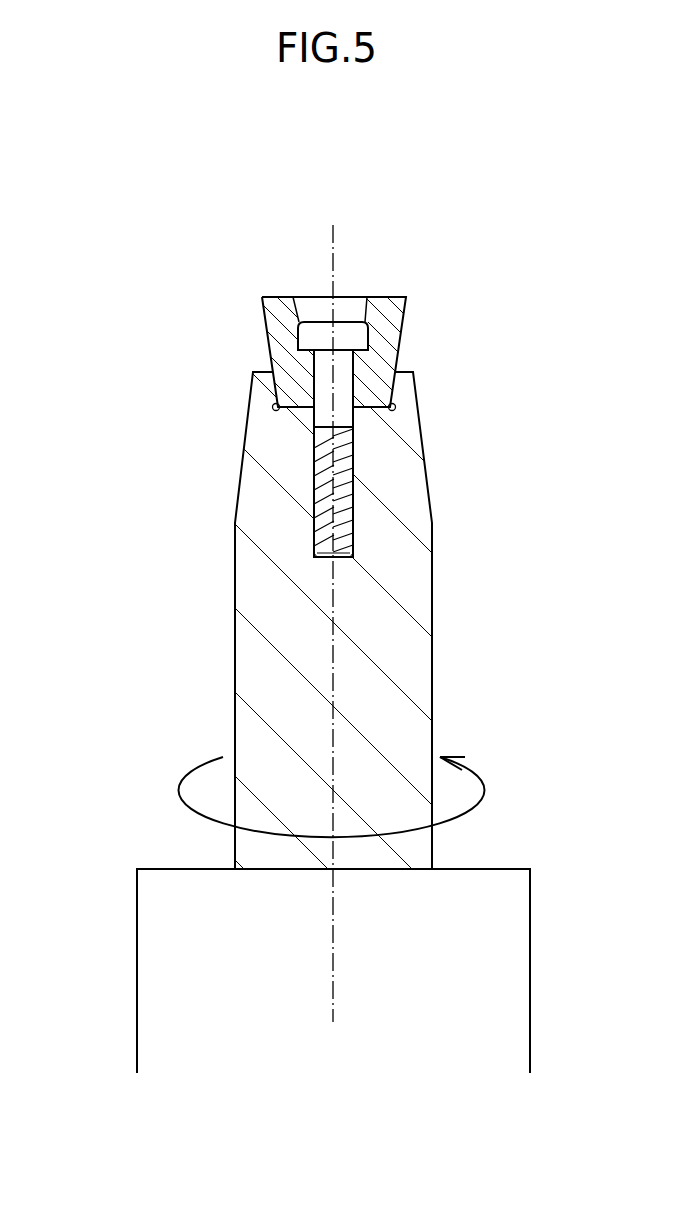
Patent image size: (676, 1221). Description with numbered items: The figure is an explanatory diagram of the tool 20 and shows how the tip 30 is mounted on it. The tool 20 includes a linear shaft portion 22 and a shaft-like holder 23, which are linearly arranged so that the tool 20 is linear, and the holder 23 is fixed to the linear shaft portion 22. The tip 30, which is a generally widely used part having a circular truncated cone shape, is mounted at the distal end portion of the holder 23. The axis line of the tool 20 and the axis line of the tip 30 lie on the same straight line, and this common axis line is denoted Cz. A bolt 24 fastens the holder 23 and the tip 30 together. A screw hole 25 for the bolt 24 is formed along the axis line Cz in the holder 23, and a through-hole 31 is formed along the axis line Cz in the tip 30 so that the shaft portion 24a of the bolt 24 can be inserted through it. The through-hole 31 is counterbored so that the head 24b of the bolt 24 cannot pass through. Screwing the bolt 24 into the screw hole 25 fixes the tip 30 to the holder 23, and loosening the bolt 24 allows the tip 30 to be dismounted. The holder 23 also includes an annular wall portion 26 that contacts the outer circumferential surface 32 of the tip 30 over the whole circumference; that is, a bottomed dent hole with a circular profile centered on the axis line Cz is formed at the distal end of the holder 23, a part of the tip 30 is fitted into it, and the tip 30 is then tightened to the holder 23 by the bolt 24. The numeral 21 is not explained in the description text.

The tool 20 is at (135, 957).
The tool holder 21 is at (338, 581).
The linear shaft portion 22 is at (498, 952).
The holder 23 is at (432, 726).
The bolt 24 is at (340, 388).
The shaft portion 24a is at (352, 472).
The head 24b is at (309, 332).
The screw hole 25 is at (352, 506).
The annular wall portion 26 is at (417, 378).
The tip 30 is at (336, 318).
The through-hole 31 is at (343, 367).
The outer circumferential surface 32 is at (395, 391).
The axis line Cz is at (333, 681).